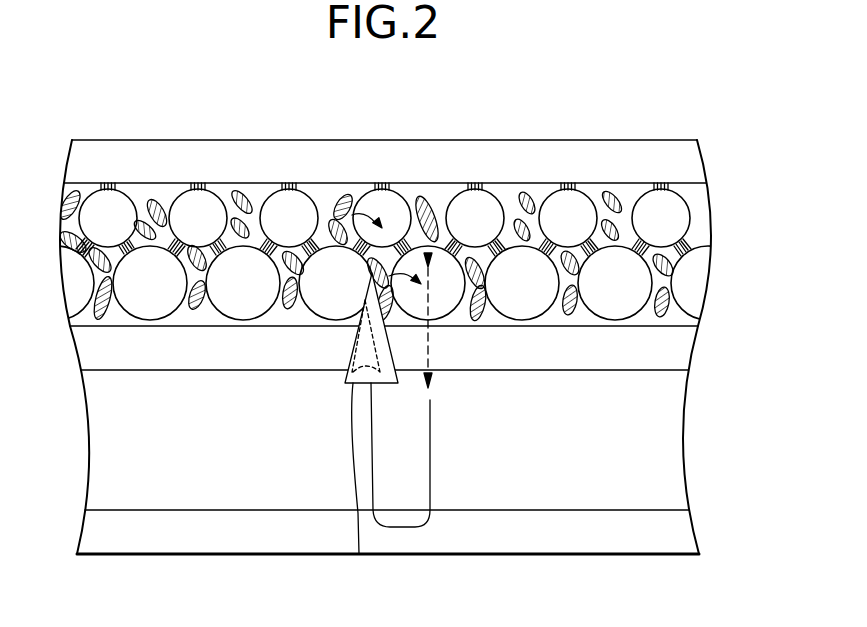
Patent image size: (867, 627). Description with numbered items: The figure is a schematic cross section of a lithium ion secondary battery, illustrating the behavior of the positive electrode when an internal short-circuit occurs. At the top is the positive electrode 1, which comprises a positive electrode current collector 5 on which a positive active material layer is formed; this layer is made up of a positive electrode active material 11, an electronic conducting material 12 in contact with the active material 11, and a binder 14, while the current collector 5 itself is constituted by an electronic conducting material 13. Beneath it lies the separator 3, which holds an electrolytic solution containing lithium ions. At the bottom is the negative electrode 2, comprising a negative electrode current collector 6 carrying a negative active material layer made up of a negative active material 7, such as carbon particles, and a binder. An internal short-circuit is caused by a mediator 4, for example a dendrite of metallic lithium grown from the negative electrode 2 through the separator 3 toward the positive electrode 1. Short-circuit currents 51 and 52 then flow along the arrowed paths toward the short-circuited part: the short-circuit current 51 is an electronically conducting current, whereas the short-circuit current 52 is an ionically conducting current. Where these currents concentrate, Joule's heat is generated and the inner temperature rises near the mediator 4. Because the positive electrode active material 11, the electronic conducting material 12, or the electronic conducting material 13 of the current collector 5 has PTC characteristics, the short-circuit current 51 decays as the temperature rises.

The positive electrode 1 is at (721, 140).
The negative electrode 2 is at (724, 373).
The separator 3 is at (725, 326).
The mediator 4 is at (358, 556).
The positive electrode current collector 5 is at (180, 140).
The negative electrode current collector 6 is at (240, 542).
The negative active material 7 is at (510, 495).
The positive electrode active material 11 is at (645, 200).
The electronic conducting material 12 is at (527, 195).
The electronic conducting material 13 is at (498, 167).
The binder 14 is at (478, 183).
The short-circuit current 51 is at (352, 214).
The short-circuit current 52 is at (430, 350).